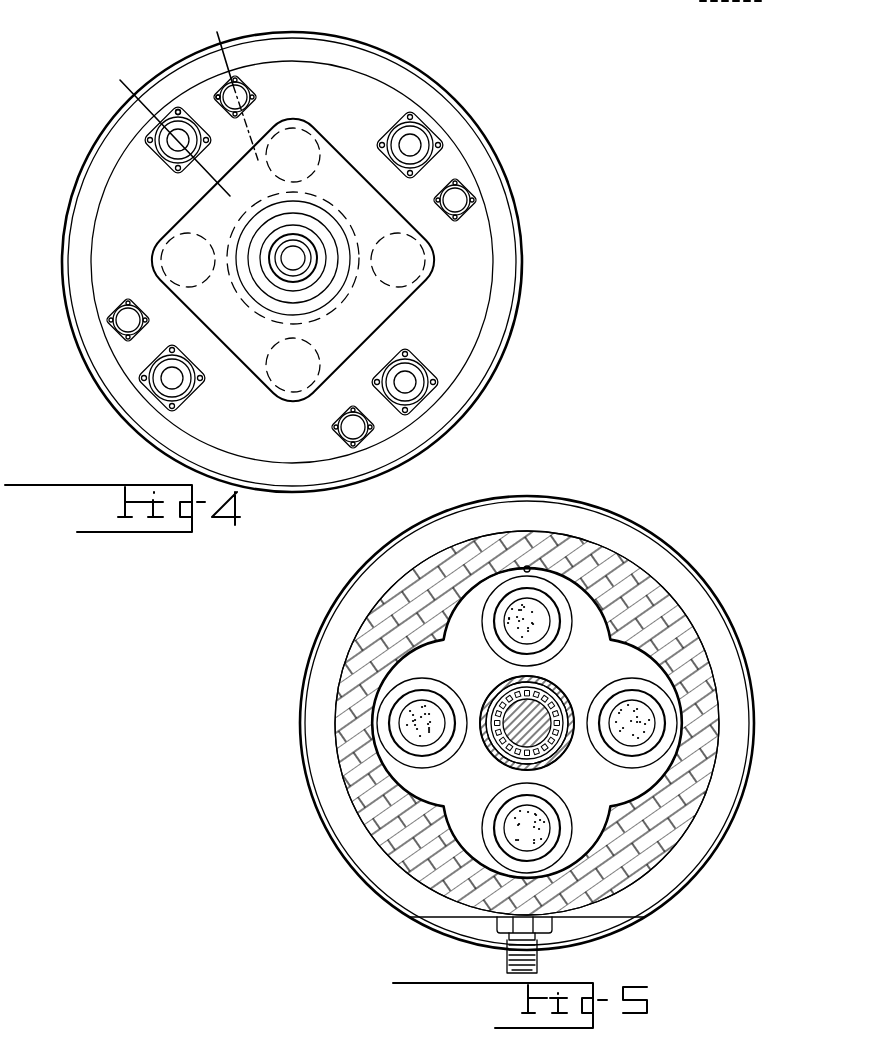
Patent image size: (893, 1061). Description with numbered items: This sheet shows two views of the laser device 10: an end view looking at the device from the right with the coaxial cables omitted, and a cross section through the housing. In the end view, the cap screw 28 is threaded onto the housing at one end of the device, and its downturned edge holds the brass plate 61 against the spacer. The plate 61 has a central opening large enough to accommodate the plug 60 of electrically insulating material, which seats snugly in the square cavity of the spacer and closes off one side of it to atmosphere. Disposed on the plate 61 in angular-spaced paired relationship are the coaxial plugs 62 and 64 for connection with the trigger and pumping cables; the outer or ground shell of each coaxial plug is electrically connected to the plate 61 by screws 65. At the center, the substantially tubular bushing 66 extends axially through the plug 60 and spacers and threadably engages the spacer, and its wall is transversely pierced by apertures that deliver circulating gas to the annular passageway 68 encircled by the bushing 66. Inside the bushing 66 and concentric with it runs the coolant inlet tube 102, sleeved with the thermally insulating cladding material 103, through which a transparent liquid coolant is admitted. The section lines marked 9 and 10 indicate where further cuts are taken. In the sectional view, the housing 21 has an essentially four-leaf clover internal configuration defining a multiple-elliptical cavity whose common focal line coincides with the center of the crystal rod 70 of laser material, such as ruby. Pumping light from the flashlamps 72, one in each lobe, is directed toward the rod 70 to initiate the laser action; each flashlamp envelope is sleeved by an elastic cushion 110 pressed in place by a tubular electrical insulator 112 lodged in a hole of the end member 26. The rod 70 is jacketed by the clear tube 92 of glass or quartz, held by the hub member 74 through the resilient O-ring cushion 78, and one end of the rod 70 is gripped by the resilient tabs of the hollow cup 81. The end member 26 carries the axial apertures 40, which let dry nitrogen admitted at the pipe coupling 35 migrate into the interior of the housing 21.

In FIG. 4, the section line 9- 9 is at (120, 80).
In FIG. 4, the device 10 is at (217, 32).
In FIG. 4, the cap screw 28 is at (478, 153).
In FIG. 4, the plug 60 is at (354, 349).
In FIG. 4, the brass plate 61 is at (342, 150).
In FIG. 4, the coaxial plug 62 is at (247, 82).
In FIG. 4, the coaxial plug 64 is at (162, 157).
In FIG. 4, the screws 65 is at (216, 95).
In FIG. 4, the tubular bushing 66 is at (338, 287).
In FIG. 4, the annular passageway 68 is at (280, 285).
In FIG. 4, the flashlamp 72 is at (433, 272).
In FIG. 5, the flashlamp 72 is at (404, 729).
In FIG. 4, the coolant inlet tube 102 is at (305, 253).
In FIG. 4, the thermally insulating cladding material 103 is at (303, 252).
In FIG. 5, the housing 21 is at (620, 629).
In FIG. 5, the end member 26 is at (624, 533).
In FIG. 5, the pipe coupling 35 is at (538, 958).
In FIG. 5, the axial apertures 40 is at (528, 566).
In FIG. 5, the crystal rod 70 is at (518, 732).
In FIG. 5, the hub member 74 is at (558, 740).
In FIG. 5, the O-ring cushion 78 is at (541, 684).
In FIG. 5, the hollow cup 81 is at (527, 723).
In FIG. 5, the clear tube 92 is at (505, 688).
In FIG. 5, the elastic cushion 110 is at (408, 752).
In FIG. 5, the tubular electrical insulator 112 is at (413, 775).